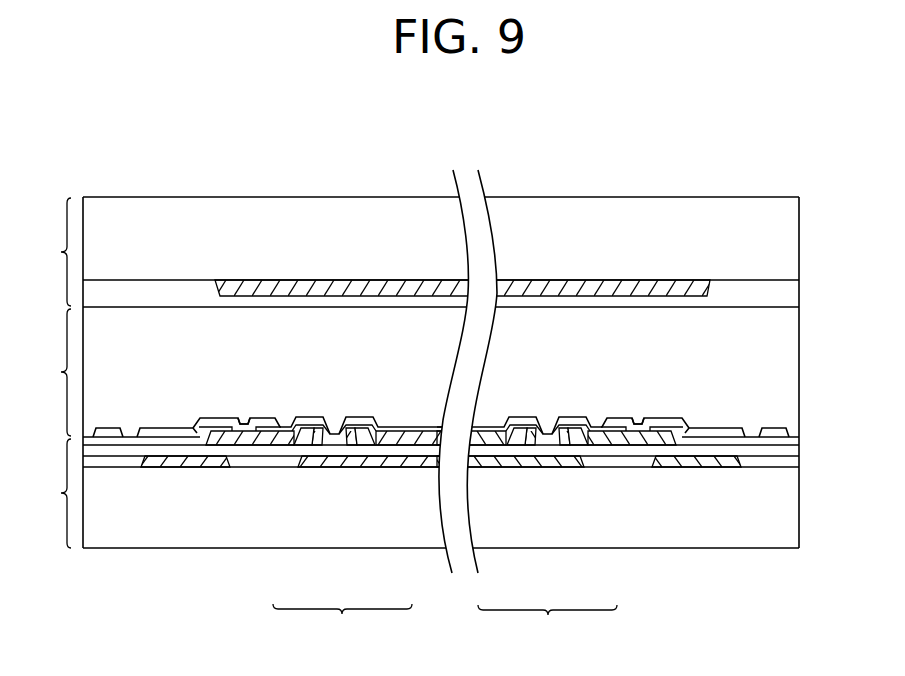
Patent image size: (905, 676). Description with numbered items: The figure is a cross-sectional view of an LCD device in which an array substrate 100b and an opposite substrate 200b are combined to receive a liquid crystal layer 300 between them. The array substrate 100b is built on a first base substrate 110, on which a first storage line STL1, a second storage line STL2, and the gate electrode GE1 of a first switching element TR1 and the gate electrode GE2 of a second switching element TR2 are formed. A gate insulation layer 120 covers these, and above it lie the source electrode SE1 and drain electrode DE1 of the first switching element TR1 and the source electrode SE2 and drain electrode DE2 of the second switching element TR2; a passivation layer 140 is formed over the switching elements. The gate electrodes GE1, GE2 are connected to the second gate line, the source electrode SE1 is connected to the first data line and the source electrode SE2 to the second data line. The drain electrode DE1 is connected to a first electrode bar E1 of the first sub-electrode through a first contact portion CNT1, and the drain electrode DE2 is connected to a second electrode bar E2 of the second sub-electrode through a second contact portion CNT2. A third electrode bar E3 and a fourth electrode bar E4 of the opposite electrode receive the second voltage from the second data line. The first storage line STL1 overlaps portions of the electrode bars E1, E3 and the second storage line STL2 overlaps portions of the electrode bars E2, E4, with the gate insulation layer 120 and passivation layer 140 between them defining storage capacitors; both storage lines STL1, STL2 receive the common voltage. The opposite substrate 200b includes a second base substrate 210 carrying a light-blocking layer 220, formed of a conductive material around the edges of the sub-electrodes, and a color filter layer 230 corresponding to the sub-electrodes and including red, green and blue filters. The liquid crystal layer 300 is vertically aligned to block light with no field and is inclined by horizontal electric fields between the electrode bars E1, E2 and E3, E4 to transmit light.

The opposite substrate 200b is at (37, 252).
The liquid crystal layer 300 is at (42, 372).
The array substrate 100b is at (37, 493).
The second base substrate 210 is at (777, 235).
The light-blocking layer 220 is at (683, 281).
The color filter layer 230 is at (777, 292).
The passivation layer 140 is at (790, 439).
The gate insulation layer 120 is at (790, 462).
The first base substrate 110 is at (790, 488).
The third electrode bar E3 is at (107, 427).
The first electrode bar E1 is at (173, 427).
The first contact portion CNT1 is at (245, 417).
The second contact portion CNT2 is at (639, 417).
The second electrode bar E2 is at (706, 427).
The fourth electrode bar E4 is at (774, 427).
The first storage line STL1 is at (176, 468).
The drain electrode of the first switching element DE1 is at (283, 446).
The gate electrode of the first switching element GE1 is at (340, 468).
The source electrode of the first switching element SE1 is at (392, 446).
The source electrode of the second switching element SE2 is at (492, 446).
The gate electrode of the second switching element GE2 is at (545, 468).
The drain electrode of the second switching element DE2 is at (597, 446).
The second storage line STL2 is at (713, 468).
The first switching element TR1 is at (342, 624).
The second switching element TR2 is at (547, 627).